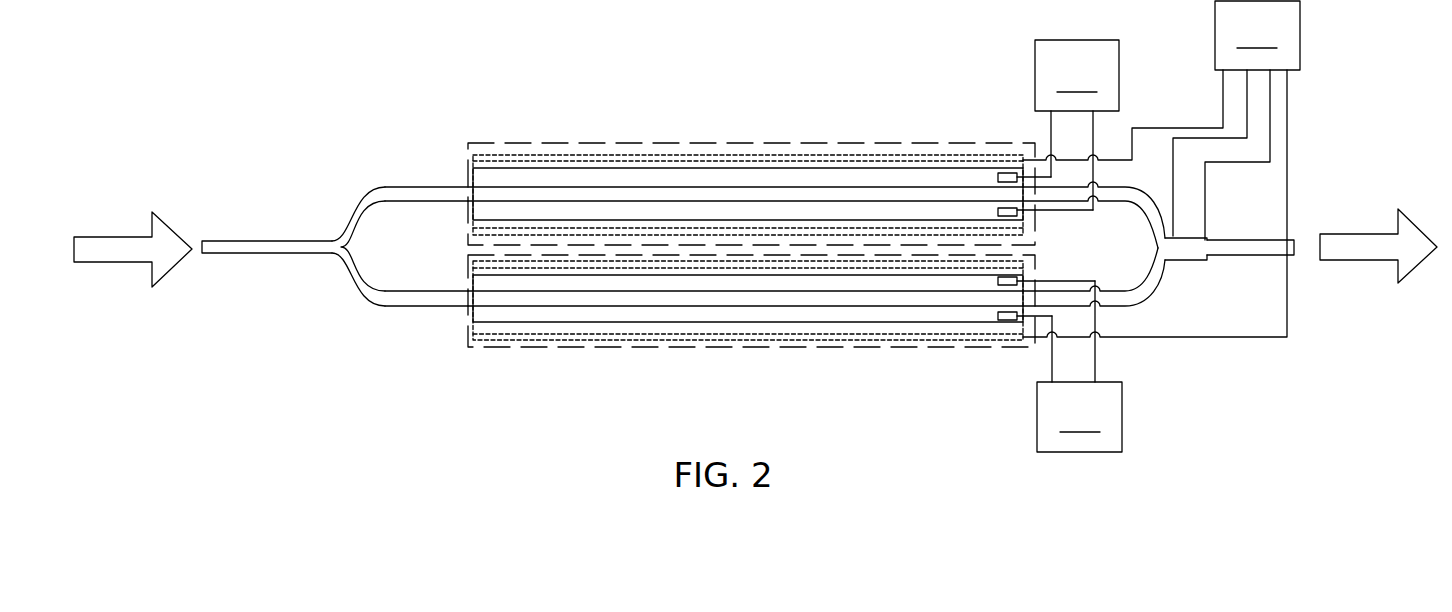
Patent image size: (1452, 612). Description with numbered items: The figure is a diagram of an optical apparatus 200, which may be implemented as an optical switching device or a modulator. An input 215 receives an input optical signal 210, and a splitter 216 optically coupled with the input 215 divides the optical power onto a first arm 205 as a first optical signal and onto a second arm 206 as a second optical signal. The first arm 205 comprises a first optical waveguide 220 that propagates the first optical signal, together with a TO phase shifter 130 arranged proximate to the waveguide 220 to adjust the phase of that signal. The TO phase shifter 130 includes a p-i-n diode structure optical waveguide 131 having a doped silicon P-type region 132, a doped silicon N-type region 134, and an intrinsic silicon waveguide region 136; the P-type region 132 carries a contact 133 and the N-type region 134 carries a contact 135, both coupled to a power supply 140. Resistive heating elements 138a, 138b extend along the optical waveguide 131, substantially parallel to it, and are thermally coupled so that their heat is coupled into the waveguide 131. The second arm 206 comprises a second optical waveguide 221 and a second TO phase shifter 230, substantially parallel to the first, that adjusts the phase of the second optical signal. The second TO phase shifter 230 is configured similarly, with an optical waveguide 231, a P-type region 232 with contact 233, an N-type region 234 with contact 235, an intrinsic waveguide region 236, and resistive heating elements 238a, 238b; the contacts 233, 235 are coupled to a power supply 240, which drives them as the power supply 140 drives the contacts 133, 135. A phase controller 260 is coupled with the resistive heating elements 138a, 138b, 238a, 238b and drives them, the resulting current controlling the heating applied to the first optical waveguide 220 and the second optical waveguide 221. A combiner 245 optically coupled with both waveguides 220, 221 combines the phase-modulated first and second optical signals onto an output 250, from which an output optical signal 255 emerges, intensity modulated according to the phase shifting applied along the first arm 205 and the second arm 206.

The optical apparatus 200 is at (305, 130).
The first arm 205 is at (530, 133).
The second arm 206 is at (515, 358).
The input optical signal 210 is at (135, 262).
The input 215 is at (220, 256).
The splitter 216 is at (318, 264).
The first optical waveguide 220 is at (383, 186).
The second optical waveguide 221 is at (383, 308).
The TO phase shifter 130 is at (777, 166).
The optical waveguide 131 is at (722, 167).
The P-type region 132 is at (468, 168).
The contact 133 is at (1010, 172).
The N-type region 134 is at (470, 224).
The contact 135 is at (1003, 207).
The waveguide region 136 is at (470, 208).
The resistive heating element 138a is at (587, 154).
The resistive heating element 138b is at (1028, 236).
The second TO phase shifter 230 is at (756, 332).
The optical waveguide 231 is at (605, 323).
The P-type region 232 is at (472, 274).
The contact 233 is at (998, 281).
The N-type region 234 is at (470, 325).
The contact 235 is at (1006, 322).
The waveguide region 236 is at (470, 308).
The resistive heating element 238a is at (470, 264).
The resistive heating element 238b is at (867, 341).
The power supply 140 is at (1077, 125).
The power supply 240 is at (1079, 366).
The phase controller 260 is at (1161, 169).
The combiner 245 is at (1170, 276).
The output 250 is at (1298, 236).
The output optical signal 255 is at (1380, 262).